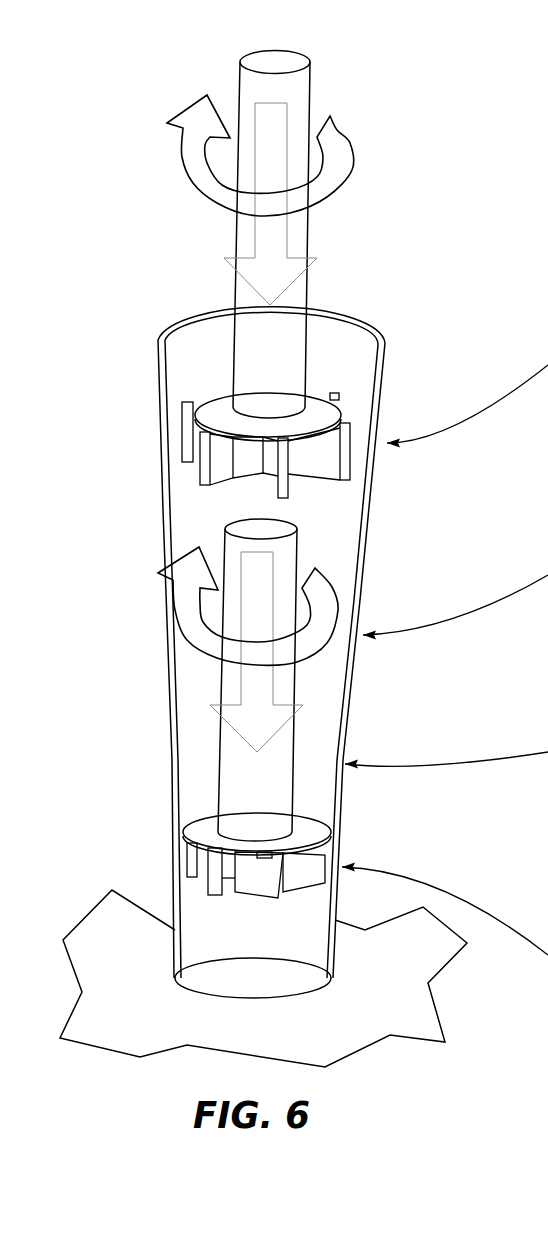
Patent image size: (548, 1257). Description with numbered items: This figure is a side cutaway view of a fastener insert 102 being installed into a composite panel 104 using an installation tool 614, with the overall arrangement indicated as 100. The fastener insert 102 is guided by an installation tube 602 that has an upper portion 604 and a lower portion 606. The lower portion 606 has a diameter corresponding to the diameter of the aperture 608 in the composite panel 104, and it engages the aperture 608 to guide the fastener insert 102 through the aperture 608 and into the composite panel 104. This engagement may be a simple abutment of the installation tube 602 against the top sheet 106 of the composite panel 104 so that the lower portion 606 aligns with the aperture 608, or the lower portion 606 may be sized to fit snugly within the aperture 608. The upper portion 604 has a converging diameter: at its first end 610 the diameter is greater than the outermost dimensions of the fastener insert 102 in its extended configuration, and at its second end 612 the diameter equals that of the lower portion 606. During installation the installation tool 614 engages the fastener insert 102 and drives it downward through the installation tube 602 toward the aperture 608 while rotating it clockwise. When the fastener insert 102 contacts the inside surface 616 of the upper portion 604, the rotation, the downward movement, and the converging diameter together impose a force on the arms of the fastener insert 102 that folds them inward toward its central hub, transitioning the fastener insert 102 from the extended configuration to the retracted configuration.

The mixing system 100 is at (143, 62).
The fastener insert 102 is at (213, 408).
The composite panel 104 is at (342, 1037).
The top sheet 106 is at (409, 975).
The installation tube 602 is at (185, 310).
The upper portion 604 is at (207, 522).
The lower portion 606 is at (205, 913).
The aperture 608 is at (270, 986).
The first end 610 is at (350, 335).
The second end 612 is at (320, 806).
The installation tool 614 is at (250, 250).
The inside surface 616 is at (344, 515).